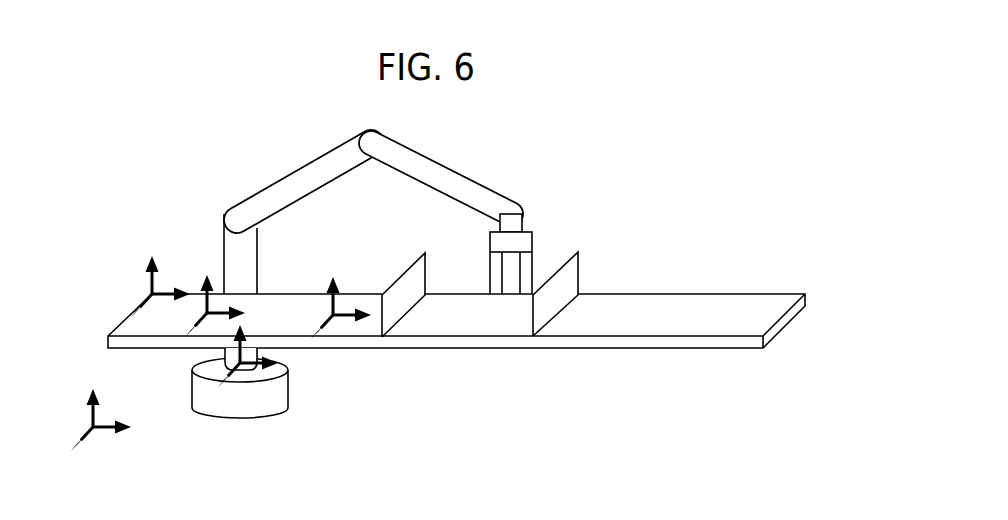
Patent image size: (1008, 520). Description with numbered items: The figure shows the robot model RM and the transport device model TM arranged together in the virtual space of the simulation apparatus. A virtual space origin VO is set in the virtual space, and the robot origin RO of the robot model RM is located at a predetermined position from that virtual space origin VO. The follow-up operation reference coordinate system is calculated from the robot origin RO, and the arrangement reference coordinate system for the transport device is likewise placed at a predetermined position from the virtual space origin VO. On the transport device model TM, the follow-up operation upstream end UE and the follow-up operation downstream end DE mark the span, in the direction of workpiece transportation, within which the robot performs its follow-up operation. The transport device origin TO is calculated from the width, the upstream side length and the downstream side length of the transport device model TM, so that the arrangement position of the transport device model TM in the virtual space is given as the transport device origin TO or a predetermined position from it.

The transport device model TM is at (722, 307).
The follow-up operation upstream end UE is at (406, 288).
The follow-up operation downstream end DE is at (563, 282).
The robot model RM is at (445, 175).
The robot origin RO is at (247, 370).
The transport device origin TO is at (150, 283).
The virtual space origin VO is at (83, 433).